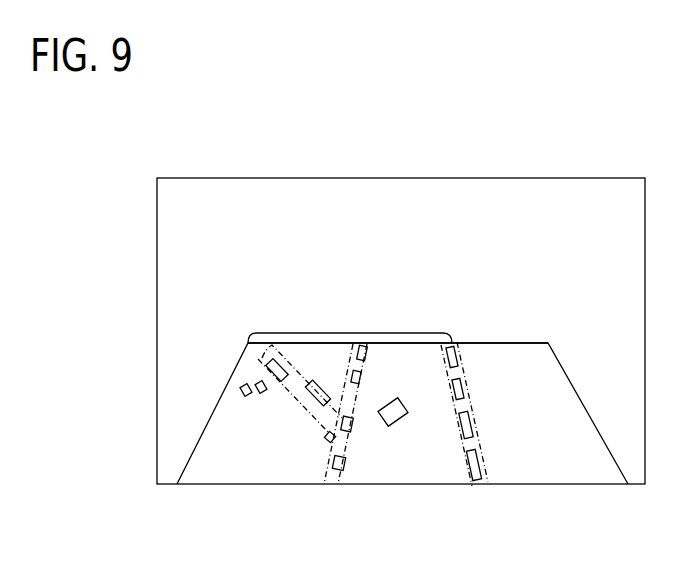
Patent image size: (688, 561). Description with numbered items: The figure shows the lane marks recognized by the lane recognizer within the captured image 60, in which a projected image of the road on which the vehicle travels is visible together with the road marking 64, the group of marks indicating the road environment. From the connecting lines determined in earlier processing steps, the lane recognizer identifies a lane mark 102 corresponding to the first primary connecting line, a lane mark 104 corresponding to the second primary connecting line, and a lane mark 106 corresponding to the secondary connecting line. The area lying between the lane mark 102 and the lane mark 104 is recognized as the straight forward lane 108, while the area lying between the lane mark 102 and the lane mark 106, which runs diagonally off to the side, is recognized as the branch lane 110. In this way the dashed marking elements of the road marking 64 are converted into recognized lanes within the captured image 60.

The captured image 60 is at (435, 178).
The road marking 64 is at (348, 333).
The lane mark 102 is at (336, 462).
The lane mark 104 is at (478, 487).
The lane mark 106 is at (298, 398).
The straight forward lane 108 is at (417, 462).
The branch lane 110 is at (250, 342).